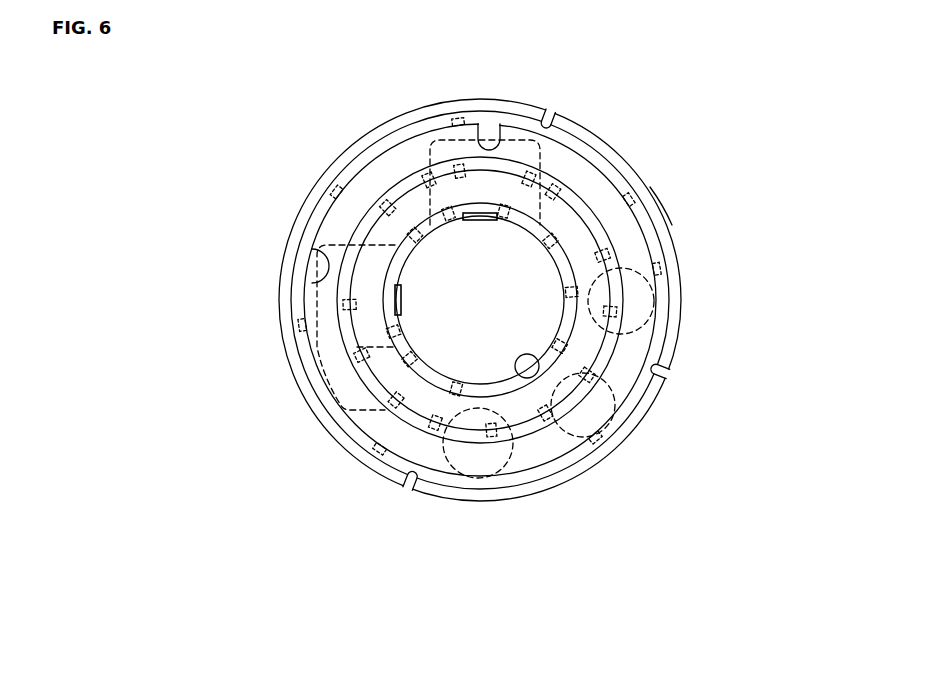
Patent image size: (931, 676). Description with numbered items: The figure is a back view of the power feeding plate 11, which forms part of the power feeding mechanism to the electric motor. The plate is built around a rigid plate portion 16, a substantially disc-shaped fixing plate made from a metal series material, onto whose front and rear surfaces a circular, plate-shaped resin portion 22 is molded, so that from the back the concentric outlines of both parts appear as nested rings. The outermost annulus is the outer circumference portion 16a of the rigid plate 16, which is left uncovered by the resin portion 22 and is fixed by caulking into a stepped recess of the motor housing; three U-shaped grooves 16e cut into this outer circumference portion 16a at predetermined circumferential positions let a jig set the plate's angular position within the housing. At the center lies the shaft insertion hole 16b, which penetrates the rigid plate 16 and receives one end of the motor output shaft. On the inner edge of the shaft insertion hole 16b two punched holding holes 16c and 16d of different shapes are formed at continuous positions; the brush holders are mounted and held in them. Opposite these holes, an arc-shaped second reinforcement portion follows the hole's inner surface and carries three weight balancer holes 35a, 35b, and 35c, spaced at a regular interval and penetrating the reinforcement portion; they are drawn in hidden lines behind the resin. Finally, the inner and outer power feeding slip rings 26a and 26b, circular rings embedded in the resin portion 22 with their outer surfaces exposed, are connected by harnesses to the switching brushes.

The power feeding plate 11 is at (485, 303).
The rigid plate portion 16 is at (683, 295).
The outer circumference portion 16a is at (650, 187).
The shaft insertion hole 16b is at (530, 378).
The holding hole 16c is at (308, 256).
The holding hole 16d is at (498, 140).
The U-shaped groove 16e is at (552, 113).
The resin portion 22 is at (617, 173).
The inner power feeding slip ring 26a is at (548, 206).
The outer power feeding slip ring 26b is at (632, 247).
The weight balancer hole 35a is at (470, 462).
The weight balancer hole 35b is at (590, 413).
The weight balancer hole 35c is at (643, 313).